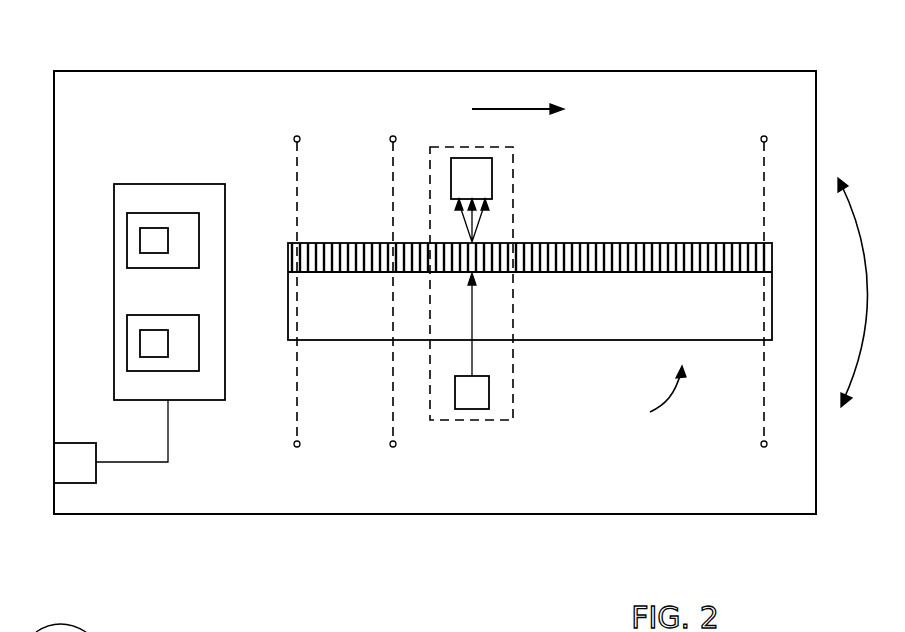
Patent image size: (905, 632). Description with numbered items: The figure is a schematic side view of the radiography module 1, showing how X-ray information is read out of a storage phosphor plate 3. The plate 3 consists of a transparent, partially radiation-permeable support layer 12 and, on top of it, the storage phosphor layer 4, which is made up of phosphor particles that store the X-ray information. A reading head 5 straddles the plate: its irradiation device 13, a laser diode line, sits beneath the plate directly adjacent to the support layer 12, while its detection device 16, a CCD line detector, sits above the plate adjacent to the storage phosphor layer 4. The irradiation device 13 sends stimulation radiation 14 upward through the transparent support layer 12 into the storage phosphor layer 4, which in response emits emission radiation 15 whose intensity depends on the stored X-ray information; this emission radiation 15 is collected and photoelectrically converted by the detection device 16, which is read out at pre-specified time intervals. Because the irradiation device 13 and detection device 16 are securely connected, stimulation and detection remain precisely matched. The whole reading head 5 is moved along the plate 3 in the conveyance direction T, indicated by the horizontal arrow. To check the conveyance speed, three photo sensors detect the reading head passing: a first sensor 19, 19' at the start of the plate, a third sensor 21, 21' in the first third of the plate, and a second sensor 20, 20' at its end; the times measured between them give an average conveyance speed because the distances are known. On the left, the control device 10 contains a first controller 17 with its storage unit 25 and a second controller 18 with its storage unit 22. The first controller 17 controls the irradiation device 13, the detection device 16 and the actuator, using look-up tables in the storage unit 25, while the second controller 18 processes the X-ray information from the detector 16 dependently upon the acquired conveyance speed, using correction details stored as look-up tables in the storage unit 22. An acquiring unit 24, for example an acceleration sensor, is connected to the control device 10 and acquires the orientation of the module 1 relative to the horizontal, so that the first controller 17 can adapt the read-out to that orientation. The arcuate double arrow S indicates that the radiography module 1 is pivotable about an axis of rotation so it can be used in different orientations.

The radiography module 1 is at (466, 505).
The storage phosphor plate 3 is at (666, 408).
The storage phosphor layer 4 is at (614, 245).
The reading head 5 is at (512, 408).
The control device 10 is at (207, 390).
The support layer 12 is at (608, 330).
The irradiation device 13 is at (470, 402).
The stimulation radiation 14 is at (473, 312).
The emission radiation 15 is at (480, 220).
The detection device 16 is at (484, 172).
The first controller 17 is at (188, 355).
The second controller 18 is at (188, 234).
The first sensor 19 is at (269, 268).
The first sensor 19' is at (268, 464).
The second sensor 20 is at (735, 270).
The second sensor 20' is at (735, 464).
The third sensor 21 is at (366, 268).
The third sensor 21' is at (363, 464).
The storage unit 22 is at (147, 240).
The acquiring unit 24 is at (82, 475).
The storage unit 25 is at (147, 344).
The conveyance direction T is at (496, 109).
The arcuate double arrow S is at (868, 345).